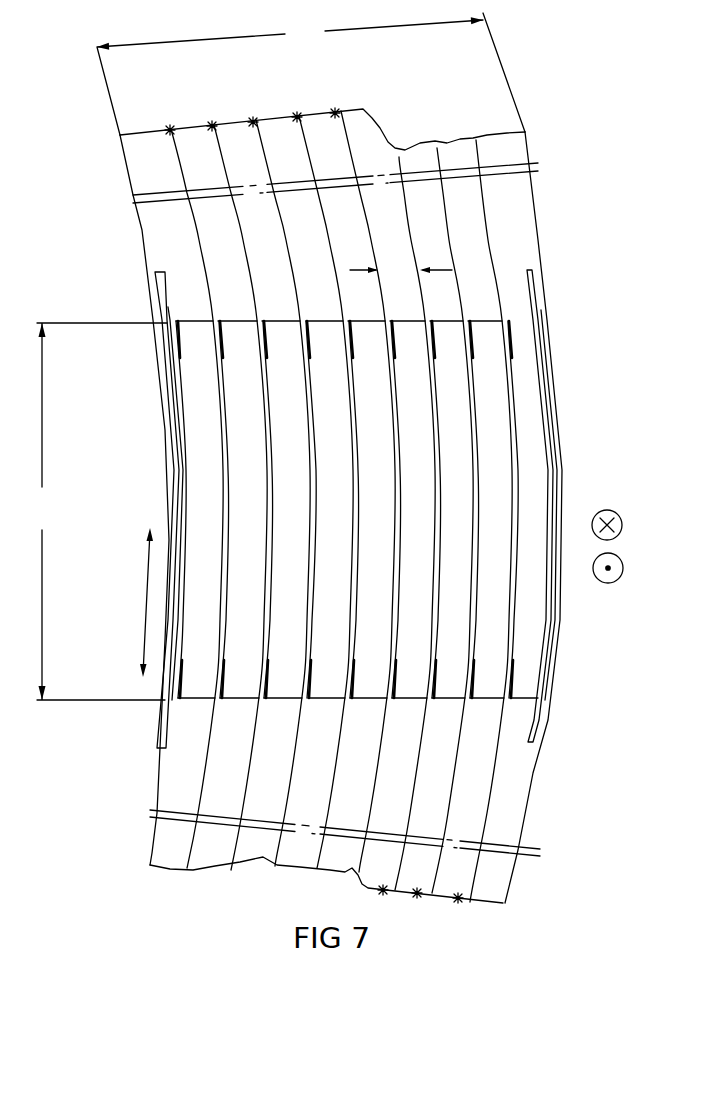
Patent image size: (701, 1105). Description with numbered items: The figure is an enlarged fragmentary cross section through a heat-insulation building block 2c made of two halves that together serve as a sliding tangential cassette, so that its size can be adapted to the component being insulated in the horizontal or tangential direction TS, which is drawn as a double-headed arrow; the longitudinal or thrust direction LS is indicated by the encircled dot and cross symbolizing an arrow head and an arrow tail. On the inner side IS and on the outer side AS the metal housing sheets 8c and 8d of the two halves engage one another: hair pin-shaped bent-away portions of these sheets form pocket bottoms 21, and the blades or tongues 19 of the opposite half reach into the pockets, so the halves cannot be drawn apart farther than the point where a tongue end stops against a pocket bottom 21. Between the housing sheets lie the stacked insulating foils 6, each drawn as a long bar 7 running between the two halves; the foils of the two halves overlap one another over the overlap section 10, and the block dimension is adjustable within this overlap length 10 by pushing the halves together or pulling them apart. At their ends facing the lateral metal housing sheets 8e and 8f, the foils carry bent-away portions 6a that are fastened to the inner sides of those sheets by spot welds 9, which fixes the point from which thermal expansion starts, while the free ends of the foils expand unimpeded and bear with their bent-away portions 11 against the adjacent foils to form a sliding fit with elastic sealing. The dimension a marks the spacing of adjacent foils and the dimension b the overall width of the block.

The building block 2c is at (584, 824).
The insulating foil 6 is at (438, 114).
The bent-away portion 6a is at (540, 880).
The slot / tooth bar 7 is at (357, 483).
The metal housing sheet 8c is at (112, 852).
The metal housing sheet 8d is at (522, 155).
The lateral metal housing sheet 8e is at (195, 125).
The lateral metal housing sheet 8f is at (465, 903).
The spot weld 9 is at (255, 121).
The overlap section 10 is at (101, 511).
The bent-away portion 11 is at (272, 713).
The blade or tongue 19 is at (169, 310).
The pocket bottom 21 is at (160, 271).
The tooth width a is at (401, 270).
The segment width b is at (311, 74).
The tangential direction TS is at (137, 602).
The inner side IS is at (142, 405).
The outer side AS is at (586, 405).
The thrust direction LS is at (621, 546).